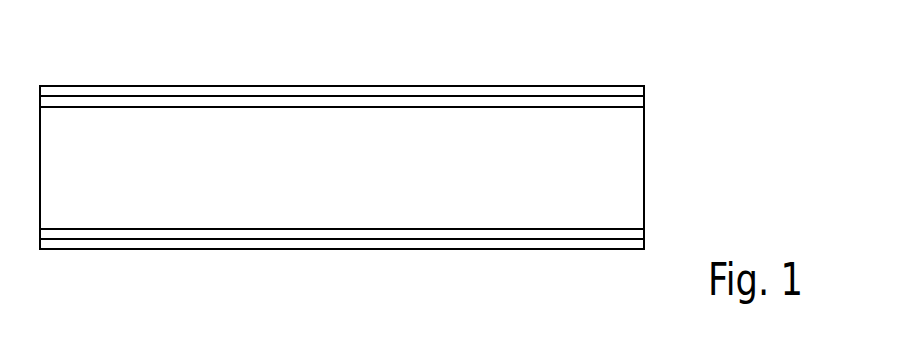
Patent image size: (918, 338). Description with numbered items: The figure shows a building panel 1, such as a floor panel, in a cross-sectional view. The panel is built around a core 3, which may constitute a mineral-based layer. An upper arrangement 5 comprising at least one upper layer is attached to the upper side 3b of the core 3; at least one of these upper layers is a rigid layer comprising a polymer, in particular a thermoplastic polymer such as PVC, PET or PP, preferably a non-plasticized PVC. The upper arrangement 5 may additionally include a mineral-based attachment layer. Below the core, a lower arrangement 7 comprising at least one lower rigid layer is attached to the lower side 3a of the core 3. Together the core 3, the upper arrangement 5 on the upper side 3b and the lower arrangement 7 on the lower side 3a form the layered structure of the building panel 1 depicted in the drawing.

The building panel 1 is at (241, 44).
The core 3 is at (365, 179).
The lower side of the core 3a is at (425, 228).
The upper side of the core 3b is at (422, 110).
The upper arrangement 5 is at (372, 82).
The lower arrangement 7 is at (328, 256).